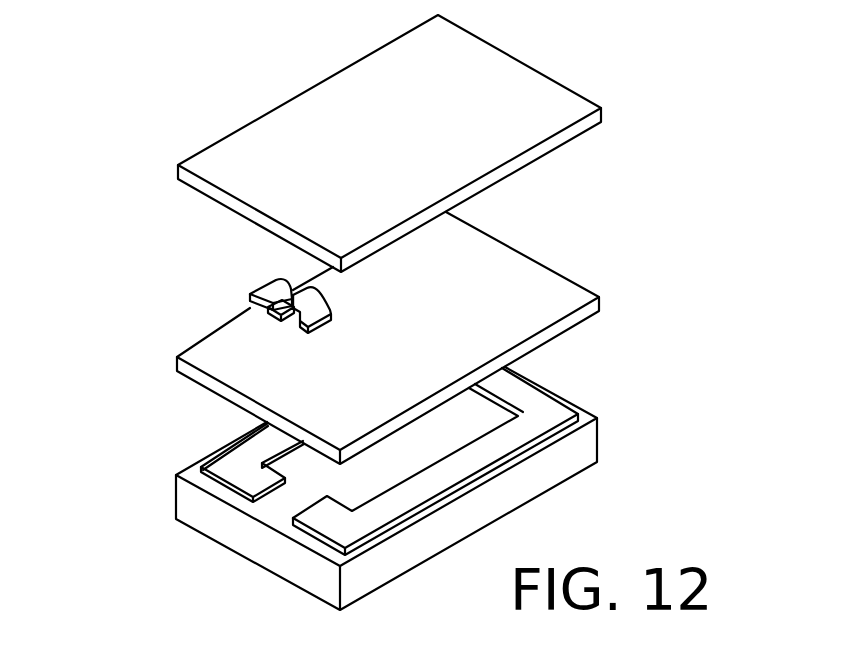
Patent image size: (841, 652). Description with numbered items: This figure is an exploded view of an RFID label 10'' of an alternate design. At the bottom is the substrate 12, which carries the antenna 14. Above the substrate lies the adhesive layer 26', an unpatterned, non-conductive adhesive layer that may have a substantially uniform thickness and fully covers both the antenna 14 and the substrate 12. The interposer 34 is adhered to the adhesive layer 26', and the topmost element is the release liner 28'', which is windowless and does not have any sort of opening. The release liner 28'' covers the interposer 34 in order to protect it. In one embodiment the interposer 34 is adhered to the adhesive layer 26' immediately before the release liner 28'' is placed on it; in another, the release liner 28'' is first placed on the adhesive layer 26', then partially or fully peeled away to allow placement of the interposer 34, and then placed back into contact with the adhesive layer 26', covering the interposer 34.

The RFID label 10'' is at (378, 309).
The substrate 12 is at (585, 446).
The antenna 14 is at (535, 417).
The adhesive layer 26' is at (413, 329).
The release liner 28'' is at (423, 140).
The interposer 34 is at (256, 276).